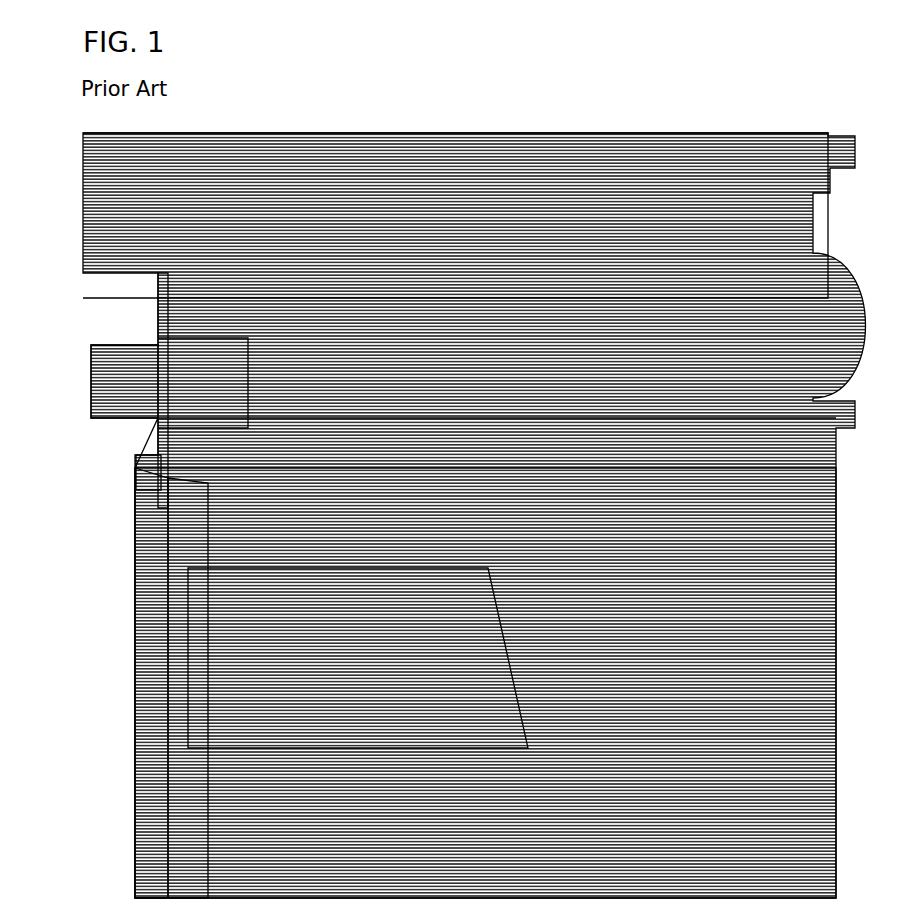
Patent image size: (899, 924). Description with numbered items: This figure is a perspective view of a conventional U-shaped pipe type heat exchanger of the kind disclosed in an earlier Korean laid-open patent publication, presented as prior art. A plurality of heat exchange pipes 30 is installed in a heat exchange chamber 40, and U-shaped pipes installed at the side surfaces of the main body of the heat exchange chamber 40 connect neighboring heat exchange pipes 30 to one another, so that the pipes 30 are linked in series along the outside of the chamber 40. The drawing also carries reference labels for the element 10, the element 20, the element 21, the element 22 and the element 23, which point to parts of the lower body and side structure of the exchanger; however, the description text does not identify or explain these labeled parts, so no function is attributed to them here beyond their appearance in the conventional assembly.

The heat exchanger core 10 is at (150, 662).
The case 20 is at (160, 513).
The side plate 21 is at (163, 610).
The side plate 22 is at (147, 560).
The bracket 23 is at (128, 477).
The heat exchange pipe 30 is at (160, 432).
The heat exchange chamber 40 is at (152, 338).